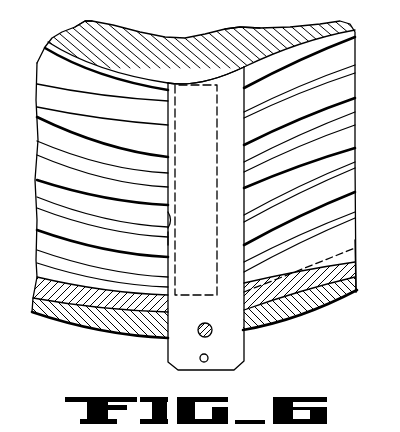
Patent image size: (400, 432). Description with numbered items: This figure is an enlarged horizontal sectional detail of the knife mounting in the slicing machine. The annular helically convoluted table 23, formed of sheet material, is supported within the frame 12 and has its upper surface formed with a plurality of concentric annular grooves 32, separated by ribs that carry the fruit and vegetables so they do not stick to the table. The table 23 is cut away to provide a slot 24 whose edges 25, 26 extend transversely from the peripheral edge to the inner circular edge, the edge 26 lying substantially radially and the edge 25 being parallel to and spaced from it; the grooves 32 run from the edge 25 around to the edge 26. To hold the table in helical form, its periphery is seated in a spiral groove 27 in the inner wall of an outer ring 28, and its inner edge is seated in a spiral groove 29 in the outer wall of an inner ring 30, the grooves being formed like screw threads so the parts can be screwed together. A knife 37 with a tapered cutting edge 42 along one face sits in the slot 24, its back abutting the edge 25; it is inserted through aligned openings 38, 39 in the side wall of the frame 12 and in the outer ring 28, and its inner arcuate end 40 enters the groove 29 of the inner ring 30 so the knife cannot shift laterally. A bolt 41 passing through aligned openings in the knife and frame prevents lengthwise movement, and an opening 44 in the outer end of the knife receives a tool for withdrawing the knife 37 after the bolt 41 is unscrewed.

The frame 12 is at (307, 306).
The annular helically convoluted table 23 is at (52, 167).
The slot 24 is at (244, 170).
The slot edge 25 is at (245, 204).
The slot edge 26 is at (166, 220).
The spiral groove 27 is at (357, 260).
The outer ring 28 is at (57, 313).
The spiral groove 29 is at (86, 22).
The inner ring 30 is at (240, 28).
The annular grooves 32 is at (79, 104).
The knife 37 is at (199, 203).
The opening 38 is at (249, 324).
The opening 39 is at (266, 288).
The inner arcuate end 40 is at (218, 84).
The bolt 41 is at (206, 325).
The tapered cutting edge 42 is at (166, 237).
The opening 44 is at (203, 363).